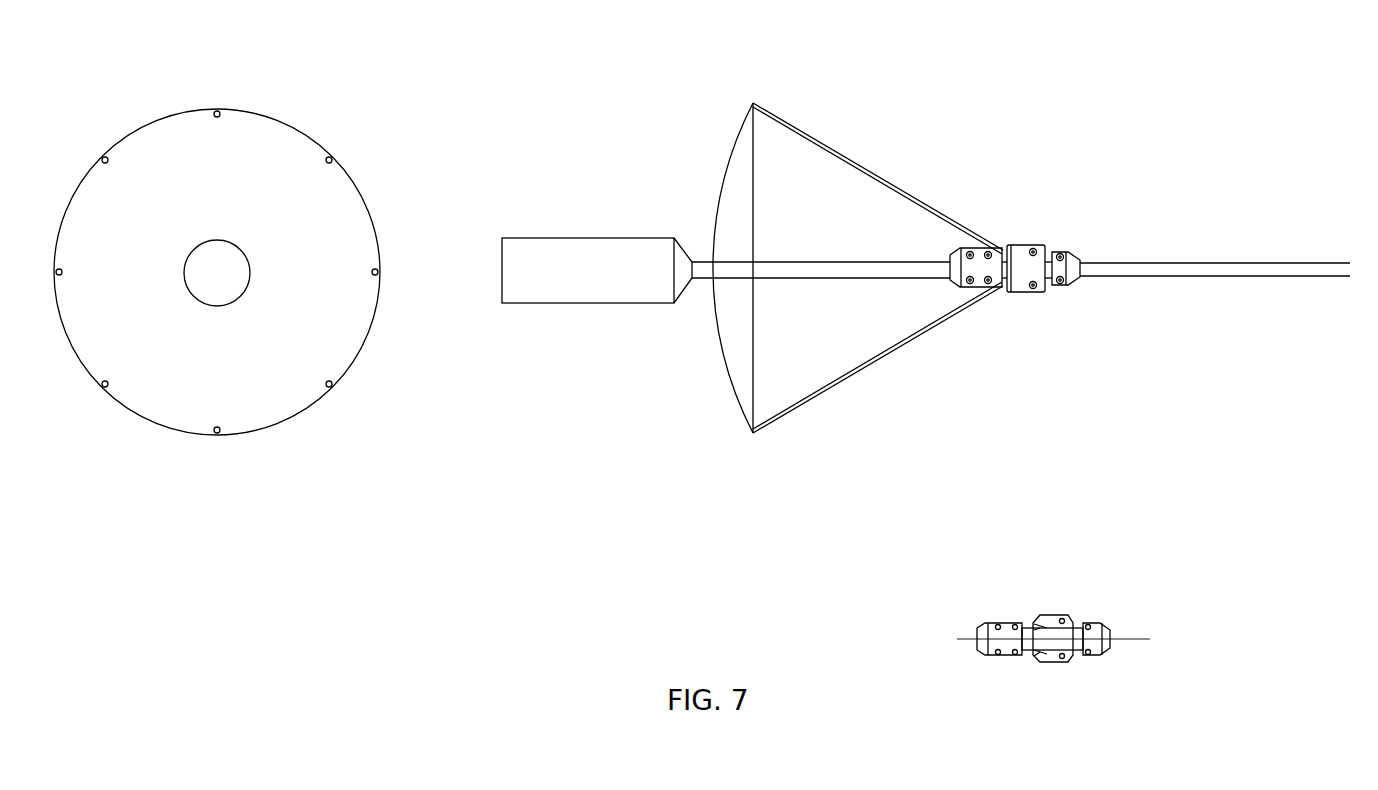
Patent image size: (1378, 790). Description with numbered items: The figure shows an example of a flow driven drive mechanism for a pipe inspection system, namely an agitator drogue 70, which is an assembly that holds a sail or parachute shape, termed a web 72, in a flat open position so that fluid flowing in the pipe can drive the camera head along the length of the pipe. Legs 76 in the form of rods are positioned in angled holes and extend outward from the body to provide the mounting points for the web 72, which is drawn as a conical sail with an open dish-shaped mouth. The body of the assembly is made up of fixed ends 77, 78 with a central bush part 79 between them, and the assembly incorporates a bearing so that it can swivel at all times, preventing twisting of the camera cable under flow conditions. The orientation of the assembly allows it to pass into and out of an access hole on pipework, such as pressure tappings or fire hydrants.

The agitator drogue 70 is at (877, 106).
The web 72 is at (717, 187).
The legs 76 is at (887, 362).
The fixed end 77 is at (958, 287).
The fixed end 78 is at (1070, 293).
The central bush part 79 is at (1028, 293).